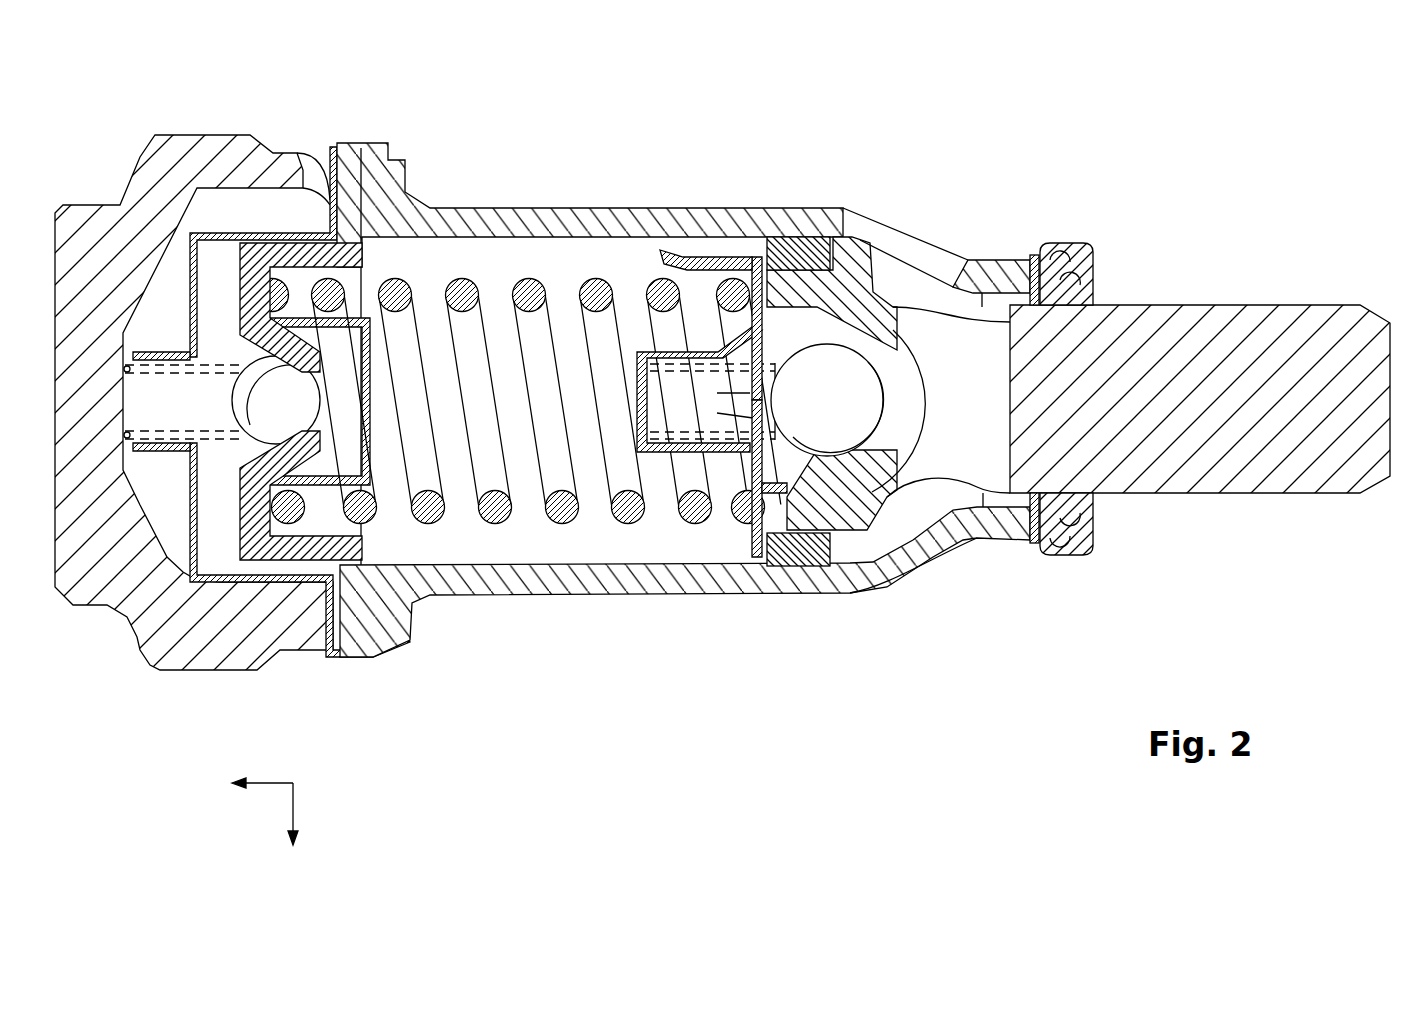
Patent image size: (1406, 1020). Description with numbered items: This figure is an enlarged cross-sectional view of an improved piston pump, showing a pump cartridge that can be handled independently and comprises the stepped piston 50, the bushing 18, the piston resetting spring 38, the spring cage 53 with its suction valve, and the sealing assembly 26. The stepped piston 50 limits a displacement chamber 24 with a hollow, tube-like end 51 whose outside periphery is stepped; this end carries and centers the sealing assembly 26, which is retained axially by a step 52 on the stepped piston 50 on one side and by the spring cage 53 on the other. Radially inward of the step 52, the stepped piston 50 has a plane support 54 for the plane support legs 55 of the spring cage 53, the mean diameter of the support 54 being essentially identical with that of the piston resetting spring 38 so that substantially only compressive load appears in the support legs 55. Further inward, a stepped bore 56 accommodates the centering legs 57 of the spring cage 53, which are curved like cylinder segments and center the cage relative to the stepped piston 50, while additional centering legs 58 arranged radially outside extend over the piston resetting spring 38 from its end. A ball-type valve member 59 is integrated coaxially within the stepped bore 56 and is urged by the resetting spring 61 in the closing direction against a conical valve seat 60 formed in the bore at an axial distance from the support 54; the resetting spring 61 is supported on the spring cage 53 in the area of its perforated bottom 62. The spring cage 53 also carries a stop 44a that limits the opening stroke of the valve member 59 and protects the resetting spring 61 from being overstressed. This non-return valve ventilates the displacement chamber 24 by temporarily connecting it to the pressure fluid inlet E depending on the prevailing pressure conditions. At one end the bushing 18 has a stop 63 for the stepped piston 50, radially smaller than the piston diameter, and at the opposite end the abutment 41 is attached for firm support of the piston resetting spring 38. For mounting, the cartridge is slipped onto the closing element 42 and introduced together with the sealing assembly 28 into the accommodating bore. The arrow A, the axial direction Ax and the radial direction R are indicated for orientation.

The closing element 42 is at (97, 263).
The abutment 41 is at (253, 267).
The bushing 18 is at (502, 227).
The displacement chamber 24 is at (528, 543).
The piston resetting spring 38 is at (462, 279).
The perforated bottom 62 is at (642, 357).
The resetting spring 61 is at (667, 440).
The spring cage 53 is at (727, 247).
The plane support 54 is at (740, 500).
The centering legs 58 is at (700, 262).
The centering legs 57 is at (737, 483).
The sealing assembly 26 is at (790, 247).
The plane support legs 55 is at (783, 533).
The step 52 is at (847, 257).
The tube-like end 51 is at (871, 387).
The stepped bore 56 is at (903, 353).
The means limiting opening stroke 44a is at (803, 480).
The conical valve seat 60 is at (860, 413).
The valve member 59 is at (943, 527).
The stop 63 is at (860, 455).
The stepped piston 50 is at (1200, 296).
The sealing assembly 28 is at (1063, 273).
The direction A is at (315, 162).
The pressure fluid inlet E is at (925, 218).
The axial direction Ax is at (270, 782).
The radial direction R is at (293, 805).